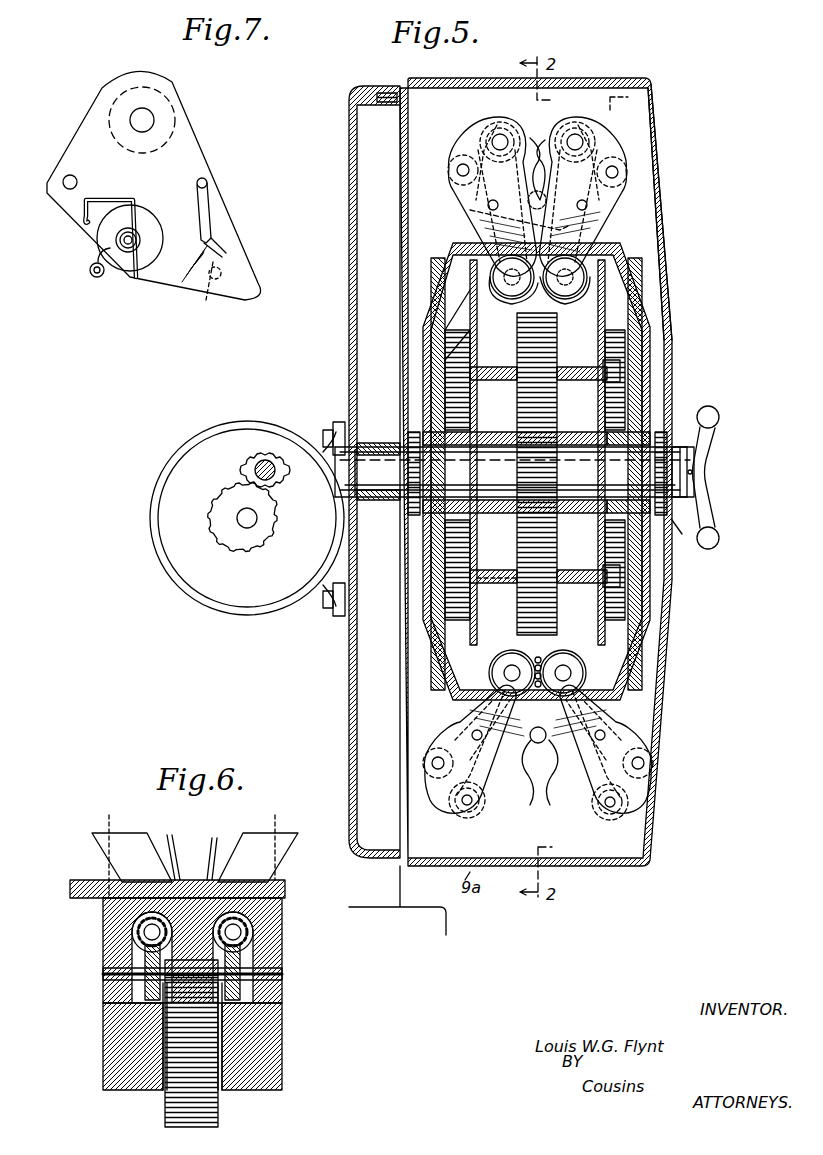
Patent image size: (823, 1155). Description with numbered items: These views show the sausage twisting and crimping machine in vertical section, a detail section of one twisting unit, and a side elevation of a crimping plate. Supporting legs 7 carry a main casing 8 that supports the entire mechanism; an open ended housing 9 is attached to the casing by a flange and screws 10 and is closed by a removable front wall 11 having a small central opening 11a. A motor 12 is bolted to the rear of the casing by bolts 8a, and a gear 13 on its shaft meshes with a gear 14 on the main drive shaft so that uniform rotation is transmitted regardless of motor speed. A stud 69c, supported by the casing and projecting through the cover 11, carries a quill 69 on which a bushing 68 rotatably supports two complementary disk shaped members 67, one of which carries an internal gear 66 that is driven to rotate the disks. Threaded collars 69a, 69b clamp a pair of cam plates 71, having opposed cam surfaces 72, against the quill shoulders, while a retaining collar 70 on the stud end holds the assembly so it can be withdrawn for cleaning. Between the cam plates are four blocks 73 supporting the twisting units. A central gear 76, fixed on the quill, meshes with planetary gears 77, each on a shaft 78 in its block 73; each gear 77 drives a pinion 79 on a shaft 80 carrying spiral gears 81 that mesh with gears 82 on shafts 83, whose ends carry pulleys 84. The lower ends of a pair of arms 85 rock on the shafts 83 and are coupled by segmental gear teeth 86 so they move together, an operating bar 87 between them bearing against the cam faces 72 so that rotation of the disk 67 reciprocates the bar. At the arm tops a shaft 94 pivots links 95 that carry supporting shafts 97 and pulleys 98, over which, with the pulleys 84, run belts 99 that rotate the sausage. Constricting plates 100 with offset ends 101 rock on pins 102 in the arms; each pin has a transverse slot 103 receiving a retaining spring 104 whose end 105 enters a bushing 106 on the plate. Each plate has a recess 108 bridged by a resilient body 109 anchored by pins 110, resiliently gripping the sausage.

In FIG. 5, the supporting legs 7 is at (392, 885).
In FIG. 5, the main casing 8 is at (349, 328).
In FIG. 5, the bolts 8a is at (339, 610).
In FIG. 5, the open ended housing 9 is at (592, 88).
In FIG. 5, the screws 10 is at (390, 92).
In FIG. 5, the front wall or cover 11 is at (670, 300).
In FIG. 5, the small opening 11a is at (672, 520).
In FIG. 5, the motor 12 is at (208, 585).
In FIG. 5, the gear 13 is at (232, 517).
In FIG. 5, the gear 14 is at (266, 445).
In FIG. 5, the internal gear 66 is at (432, 362).
In FIG. 5, the complementary disk shaped members 67 is at (452, 250).
In FIG. 5, the bushing 68 is at (585, 430).
In FIG. 5, the quill 69 is at (512, 472).
In FIG. 5, the threaded collar 69a is at (410, 442).
In FIG. 5, the threaded collar 69b is at (668, 430).
In FIG. 5, the stud 69c is at (390, 480).
In FIG. 5, the retaining collar 70 is at (712, 515).
In FIG. 5, the cam plates 71 is at (433, 290).
In FIG. 5, the cam surfaces 72 is at (458, 702).
In FIG. 5, the blocks 73 is at (535, 475).
In FIG. 6, the blocks 73 is at (108, 1044).
In FIG. 5, the central gear 76 is at (530, 440).
In FIG. 5, the planetary gears 77 is at (557, 350).
In FIG. 6, the planetary gears 77 is at (215, 1108).
In FIG. 5, the shaft 78 is at (575, 568).
In FIG. 6, the shaft 78 is at (163, 1090).
In FIG. 6, the pinion 79 is at (275, 1040).
In FIG. 6, the shaft 80 is at (103, 974).
In FIG. 6, the spiral gears 81 is at (240, 996).
In FIG. 6, the gears 82 is at (130, 928).
In FIG. 5, the shafts 83 is at (492, 650).
In FIG. 6, the shafts 83 is at (270, 960).
In FIG. 5, the pulleys 84 is at (565, 665).
In FIG. 5, the arms 85 is at (465, 210).
In FIG. 6, the arms 85 is at (252, 834).
In FIG. 5, the segmental gear teeth 86 is at (541, 662).
In FIG. 6, the bar 87 is at (90, 880).
In FIG. 7, the shaft 94 is at (70, 175).
In FIG. 5, the shaft 94 is at (456, 172).
In FIG. 5, the links 95 is at (440, 790).
In FIG. 7, the supporting shafts 97 is at (148, 110).
In FIG. 5, the supporting shafts 97 is at (610, 806).
In FIG. 5, the pulleys 98 is at (497, 124).
In FIG. 5, the belts 99 is at (560, 768).
In FIG. 6, the belts 99 is at (208, 850).
In FIG. 7, the constricting plates 100 is at (180, 123).
In FIG. 5, the constricting plates 100 is at (540, 160).
In FIG. 7, the offset ends 101 is at (248, 292).
In FIG. 7, the pins 102 is at (115, 247).
In FIG. 7, the transverse slot 103 is at (140, 226).
In FIG. 7, the retaining spring 104 is at (122, 198).
In FIG. 7, the end of spring 105 is at (106, 278).
In FIG. 7, the bushing 106 is at (118, 240).
In FIG. 7, the recess 108 is at (214, 218).
In FIG. 7, the body of resilient material 109 is at (214, 238).
In FIG. 7, the pin 110 is at (206, 178).